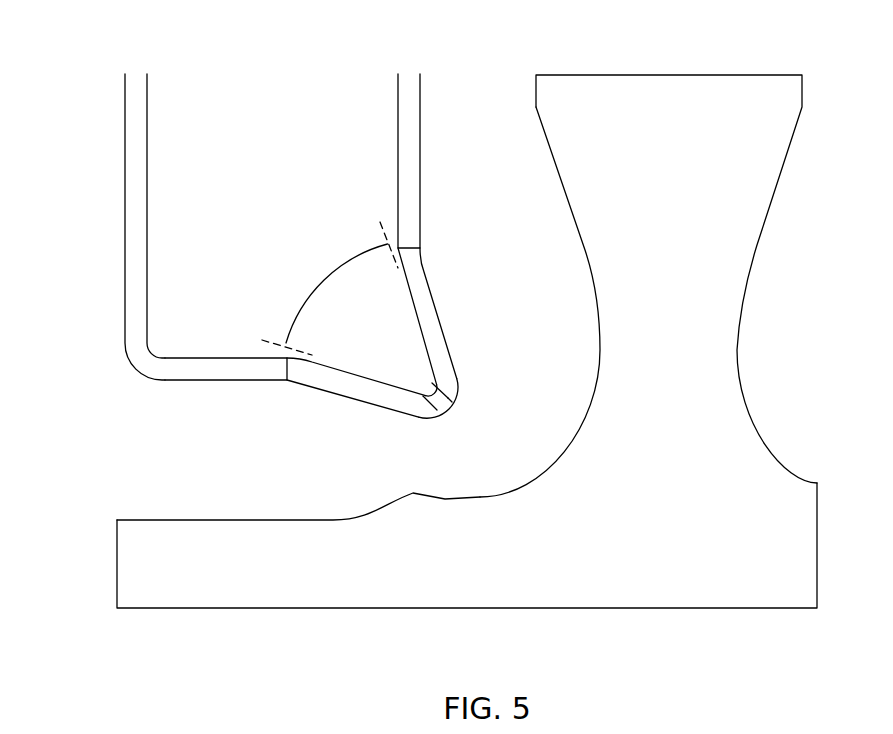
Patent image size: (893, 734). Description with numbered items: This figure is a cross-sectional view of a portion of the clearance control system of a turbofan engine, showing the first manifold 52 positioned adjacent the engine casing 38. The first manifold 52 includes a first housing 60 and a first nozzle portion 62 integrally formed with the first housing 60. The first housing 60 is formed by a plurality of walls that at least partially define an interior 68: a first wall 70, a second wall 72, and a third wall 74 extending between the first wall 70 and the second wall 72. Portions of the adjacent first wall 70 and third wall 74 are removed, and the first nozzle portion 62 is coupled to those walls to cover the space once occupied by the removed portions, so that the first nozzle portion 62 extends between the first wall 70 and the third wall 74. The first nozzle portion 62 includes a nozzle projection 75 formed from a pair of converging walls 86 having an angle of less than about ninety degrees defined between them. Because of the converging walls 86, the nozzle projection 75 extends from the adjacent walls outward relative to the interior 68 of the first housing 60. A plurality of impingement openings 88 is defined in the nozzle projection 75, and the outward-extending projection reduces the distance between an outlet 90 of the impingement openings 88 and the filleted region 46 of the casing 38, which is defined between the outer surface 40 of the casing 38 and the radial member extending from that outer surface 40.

The casing 38 is at (117, 565).
The outer surface 40 is at (282, 520).
The filleted region 46 is at (580, 432).
The first manifold 52 is at (157, 52).
The first housing 60 is at (92, 135).
The first nozzle portion 62 is at (483, 272).
The interior 68 is at (249, 193).
The first wall 70 is at (422, 160).
The second wall 72 is at (125, 250).
The third wall 74 is at (215, 381).
The nozzle projection 75 is at (457, 372).
The converging walls 86 is at (440, 323).
The impingement openings 88 is at (421, 406).
The outlet 90 is at (452, 406).